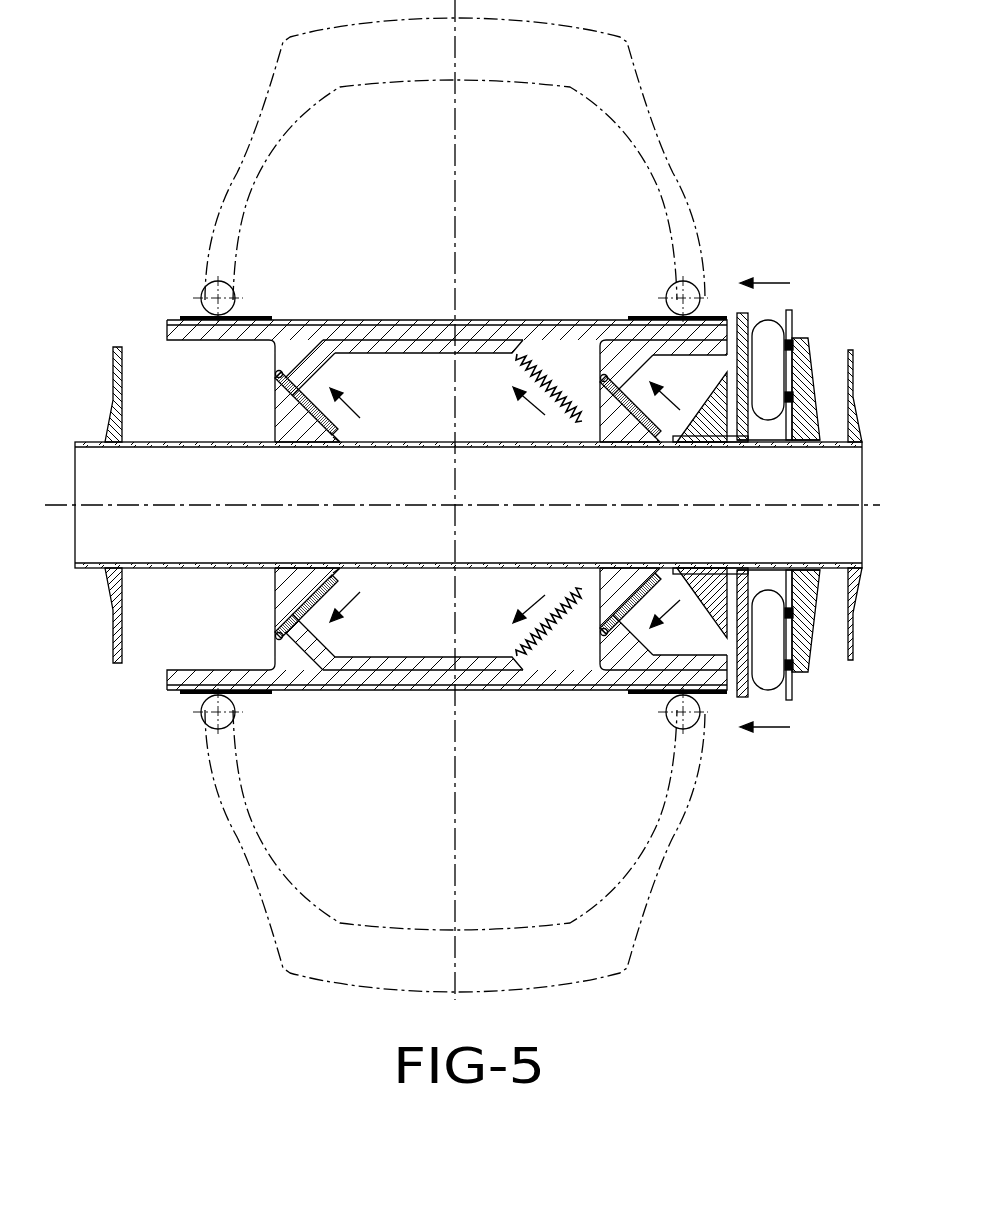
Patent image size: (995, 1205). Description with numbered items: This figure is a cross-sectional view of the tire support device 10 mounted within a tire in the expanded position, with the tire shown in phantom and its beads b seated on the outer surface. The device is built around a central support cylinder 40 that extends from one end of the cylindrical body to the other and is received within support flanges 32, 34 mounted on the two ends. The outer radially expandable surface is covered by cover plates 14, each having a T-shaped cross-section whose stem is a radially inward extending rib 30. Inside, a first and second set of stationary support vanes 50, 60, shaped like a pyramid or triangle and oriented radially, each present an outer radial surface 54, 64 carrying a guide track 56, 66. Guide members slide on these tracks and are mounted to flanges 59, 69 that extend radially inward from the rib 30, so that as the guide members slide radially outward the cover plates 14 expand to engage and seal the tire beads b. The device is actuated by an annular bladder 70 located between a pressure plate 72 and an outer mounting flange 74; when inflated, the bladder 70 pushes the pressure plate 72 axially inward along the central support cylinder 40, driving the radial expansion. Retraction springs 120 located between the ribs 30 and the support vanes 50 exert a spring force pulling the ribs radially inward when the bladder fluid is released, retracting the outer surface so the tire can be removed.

The tire support device 10 is at (862, 316).
The cover plate 14 is at (371, 320).
The tire bead b is at (220, 296).
The rib 30 is at (329, 352).
The support flange 32 is at (113, 357).
The support flange 34 is at (858, 426).
The central support cylinder 40 is at (98, 442).
The stationary support vane 50 is at (598, 432).
The outer radial surface 54 is at (295, 404).
The guide track 56 is at (672, 428).
The flange 59 is at (290, 375).
The stationary support vane 60 is at (295, 440).
The outer radial surface 64 is at (643, 432).
The guide track 66 is at (335, 425).
The flange 69 is at (606, 380).
The annular bladder 70 is at (764, 320).
The pressure plate 72 is at (750, 697).
The outer mounting flange 74 is at (800, 690).
The retraction spring 120 is at (520, 355).